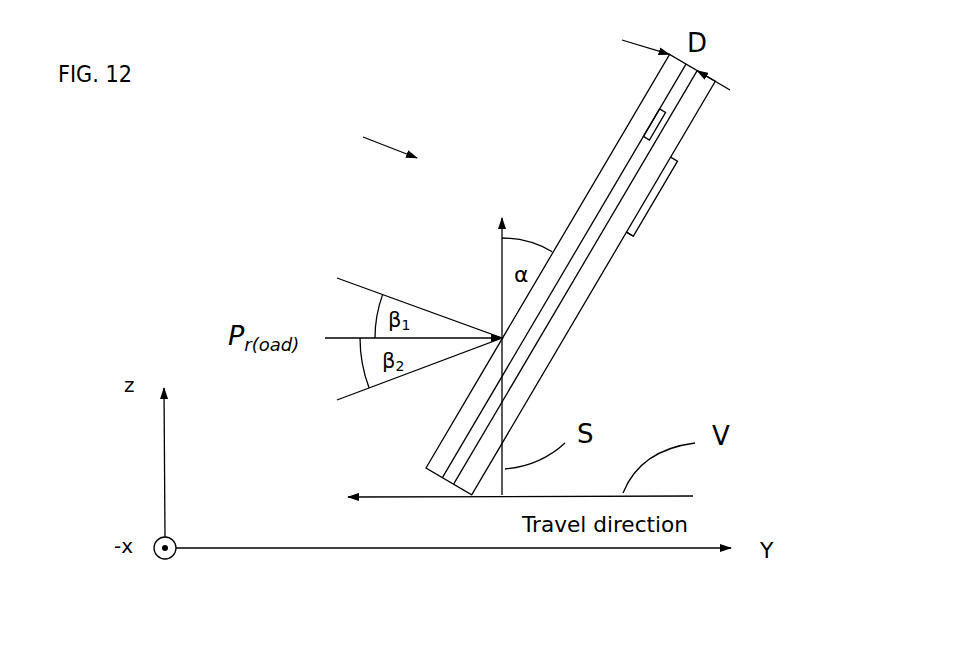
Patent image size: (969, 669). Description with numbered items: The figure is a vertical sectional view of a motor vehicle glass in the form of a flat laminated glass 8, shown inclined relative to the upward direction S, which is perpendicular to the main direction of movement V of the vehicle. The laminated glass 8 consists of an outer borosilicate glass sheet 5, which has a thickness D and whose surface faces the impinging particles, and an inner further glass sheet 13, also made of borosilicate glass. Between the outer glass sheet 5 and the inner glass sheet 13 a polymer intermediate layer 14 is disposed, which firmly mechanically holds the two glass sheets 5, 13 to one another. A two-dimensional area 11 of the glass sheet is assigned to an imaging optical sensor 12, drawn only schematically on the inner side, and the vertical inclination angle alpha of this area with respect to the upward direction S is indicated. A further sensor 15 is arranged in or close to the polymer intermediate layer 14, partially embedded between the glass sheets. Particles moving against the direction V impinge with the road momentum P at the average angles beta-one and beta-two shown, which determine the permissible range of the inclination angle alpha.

The glass sheet 5 is at (619, 156).
The laminated glass 8 is at (374, 137).
The two-dimensional area 11 is at (662, 188).
The optical sensor 12 is at (646, 216).
The further glass sheet 13 is at (576, 287).
The polymer intermediate layer 14 is at (540, 335).
The sensor 15 is at (652, 137).